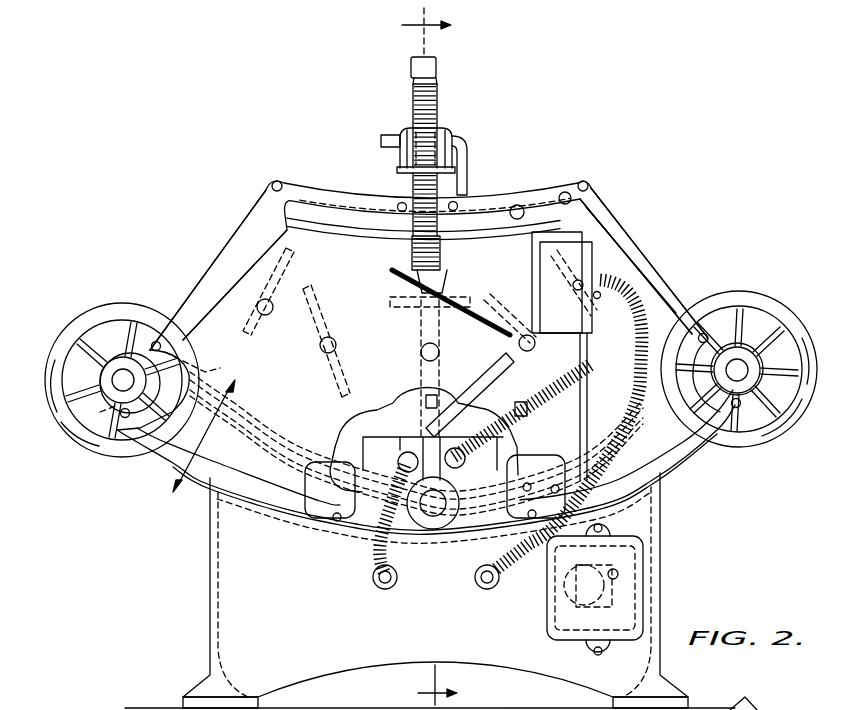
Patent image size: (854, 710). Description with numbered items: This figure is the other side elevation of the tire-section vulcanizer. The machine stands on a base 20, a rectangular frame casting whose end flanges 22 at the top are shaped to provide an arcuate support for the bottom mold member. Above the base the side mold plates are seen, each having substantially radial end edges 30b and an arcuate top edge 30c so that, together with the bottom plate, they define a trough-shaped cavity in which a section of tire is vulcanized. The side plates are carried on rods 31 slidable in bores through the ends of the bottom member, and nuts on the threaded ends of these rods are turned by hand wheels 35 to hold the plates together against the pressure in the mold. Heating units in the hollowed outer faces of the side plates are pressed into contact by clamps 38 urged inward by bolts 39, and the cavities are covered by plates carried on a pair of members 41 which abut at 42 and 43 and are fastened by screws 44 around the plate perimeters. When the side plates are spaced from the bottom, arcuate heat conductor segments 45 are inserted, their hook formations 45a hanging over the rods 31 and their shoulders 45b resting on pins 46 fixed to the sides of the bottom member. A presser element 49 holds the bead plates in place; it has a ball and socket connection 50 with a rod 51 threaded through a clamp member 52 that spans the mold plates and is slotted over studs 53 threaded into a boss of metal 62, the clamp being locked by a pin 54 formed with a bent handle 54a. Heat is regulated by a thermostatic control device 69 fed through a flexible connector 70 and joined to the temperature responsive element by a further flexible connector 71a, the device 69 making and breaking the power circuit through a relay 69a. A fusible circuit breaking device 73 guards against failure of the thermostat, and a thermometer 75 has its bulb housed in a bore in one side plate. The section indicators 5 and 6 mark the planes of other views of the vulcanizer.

The section line 5- 5 is at (440, 356).
The section line 6- 6 is at (192, 430).
The base 20 is at (210, 633).
The end flanges 22 is at (262, 518).
The end edges 30b is at (640, 207).
The top edges 30c is at (507, 192).
The rods 31 is at (123, 378).
The hand wheels 35 is at (118, 305).
The clamps 38 is at (310, 337).
The bolts 39 is at (421, 350).
The members 41 is at (308, 217).
The abutment 42 is at (432, 205).
The abutment 43 is at (427, 402).
The screws 44 is at (400, 203).
The heat conductor segments 45 is at (180, 368).
The hook formations 45a is at (100, 408).
The shoulders 45b is at (772, 699).
The pins 46 is at (323, 511).
The presser element 49 is at (470, 296).
The ball and socket connection 50 is at (447, 278).
The rod 51 is at (440, 105).
The clamp member 52 is at (449, 143).
The studs 53 is at (432, 128).
The pins 54 is at (382, 135).
The handles 54a is at (467, 178).
The boss of metal 62 is at (411, 250).
The thermostatic device 69 is at (578, 270).
The relay 69a is at (604, 582).
The flexible connector 70 is at (630, 452).
The flexible connector 71a is at (522, 402).
The circuit breaking device 73 is at (423, 478).
The thermometer 75 is at (478, 404).